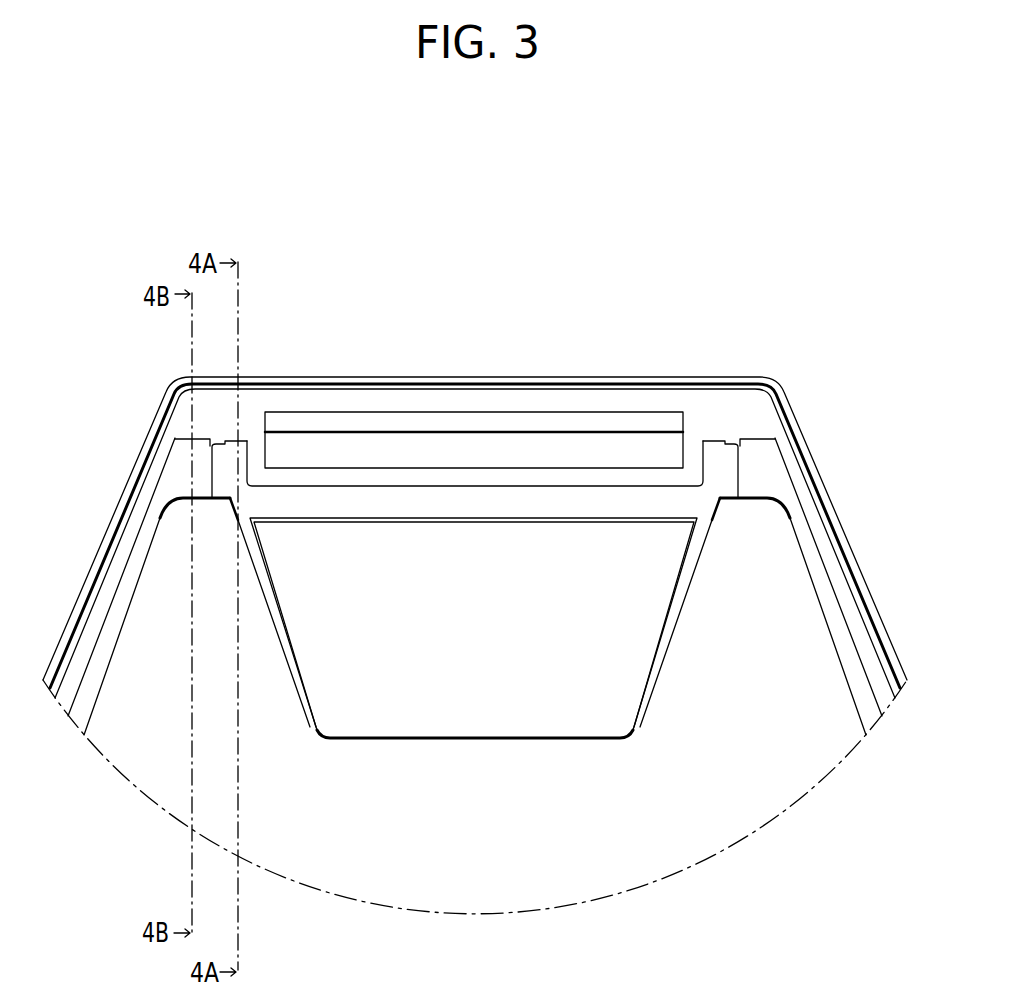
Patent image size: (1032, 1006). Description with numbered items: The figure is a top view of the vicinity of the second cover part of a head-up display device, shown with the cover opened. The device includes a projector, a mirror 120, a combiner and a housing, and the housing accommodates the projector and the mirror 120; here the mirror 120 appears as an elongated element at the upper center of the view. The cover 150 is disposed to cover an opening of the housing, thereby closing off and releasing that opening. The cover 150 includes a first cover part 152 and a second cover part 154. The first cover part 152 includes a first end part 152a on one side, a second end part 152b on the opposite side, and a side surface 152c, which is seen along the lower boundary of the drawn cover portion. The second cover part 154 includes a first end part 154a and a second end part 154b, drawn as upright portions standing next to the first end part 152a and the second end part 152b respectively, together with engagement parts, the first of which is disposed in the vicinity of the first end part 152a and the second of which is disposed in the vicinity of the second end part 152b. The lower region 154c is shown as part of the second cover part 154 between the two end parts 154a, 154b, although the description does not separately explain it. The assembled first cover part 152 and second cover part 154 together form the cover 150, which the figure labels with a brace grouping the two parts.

The mirror 120 is at (523, 452).
The cover 150 is at (897, 850).
The first cover part 152 is at (790, 777).
The first end part 152a is at (183, 437).
The second end part 152b is at (755, 440).
The side surface 152c is at (440, 742).
The second cover part 154 is at (610, 688).
The first end part 154a is at (222, 468).
The second end part 154b is at (725, 457).
The holding portion of holder 154c is at (473, 733).